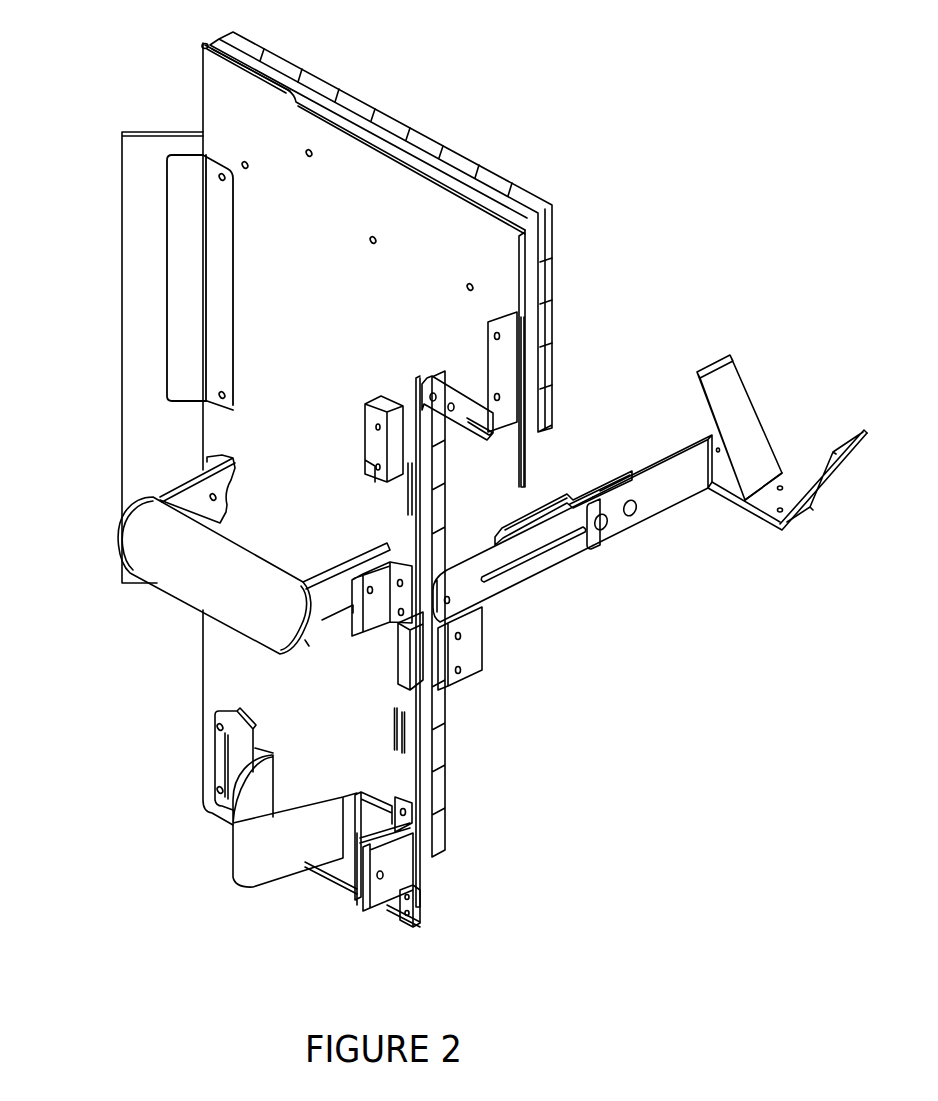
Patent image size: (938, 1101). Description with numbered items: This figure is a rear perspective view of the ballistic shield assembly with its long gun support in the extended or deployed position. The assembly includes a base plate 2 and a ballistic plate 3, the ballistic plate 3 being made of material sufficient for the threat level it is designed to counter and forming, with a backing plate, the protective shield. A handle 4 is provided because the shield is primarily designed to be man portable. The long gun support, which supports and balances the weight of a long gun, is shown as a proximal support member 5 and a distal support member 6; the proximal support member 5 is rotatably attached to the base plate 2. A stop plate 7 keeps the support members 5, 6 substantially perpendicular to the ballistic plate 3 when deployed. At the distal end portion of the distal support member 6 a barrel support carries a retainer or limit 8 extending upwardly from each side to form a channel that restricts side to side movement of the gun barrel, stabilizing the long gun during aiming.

The base plate 2 is at (215, 83).
The ballistic plate 3 is at (390, 122).
The handle 4 is at (173, 553).
The proximal support member 5 is at (533, 563).
The distal support member 6 is at (660, 498).
The stop plate 7 is at (462, 655).
The retainer or limit 8 is at (828, 473).